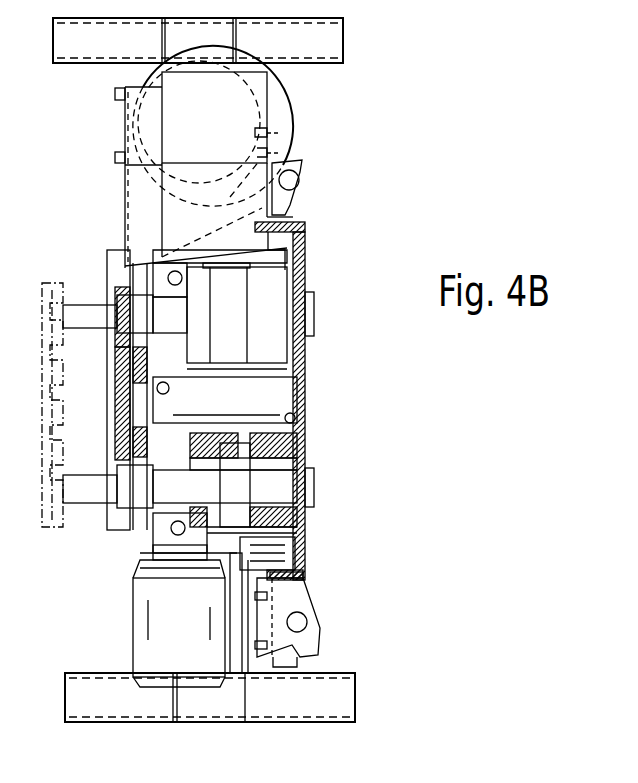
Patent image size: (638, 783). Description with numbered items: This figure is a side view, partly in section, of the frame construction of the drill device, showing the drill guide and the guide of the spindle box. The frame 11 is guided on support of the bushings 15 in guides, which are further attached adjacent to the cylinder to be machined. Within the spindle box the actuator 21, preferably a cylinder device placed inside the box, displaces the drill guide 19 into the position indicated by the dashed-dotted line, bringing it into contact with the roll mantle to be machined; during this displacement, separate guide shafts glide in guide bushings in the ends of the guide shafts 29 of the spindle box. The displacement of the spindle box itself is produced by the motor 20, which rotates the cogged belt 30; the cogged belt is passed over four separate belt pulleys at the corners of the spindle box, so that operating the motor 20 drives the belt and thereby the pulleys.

The frame 11 is at (333, 37).
The bushings 15 is at (302, 178).
The drill guide 19 is at (127, 523).
The motor 20 is at (155, 617).
The actuator 21 is at (246, 396).
The guide shafts 29 is at (277, 470).
The cogged belt 30 is at (312, 532).